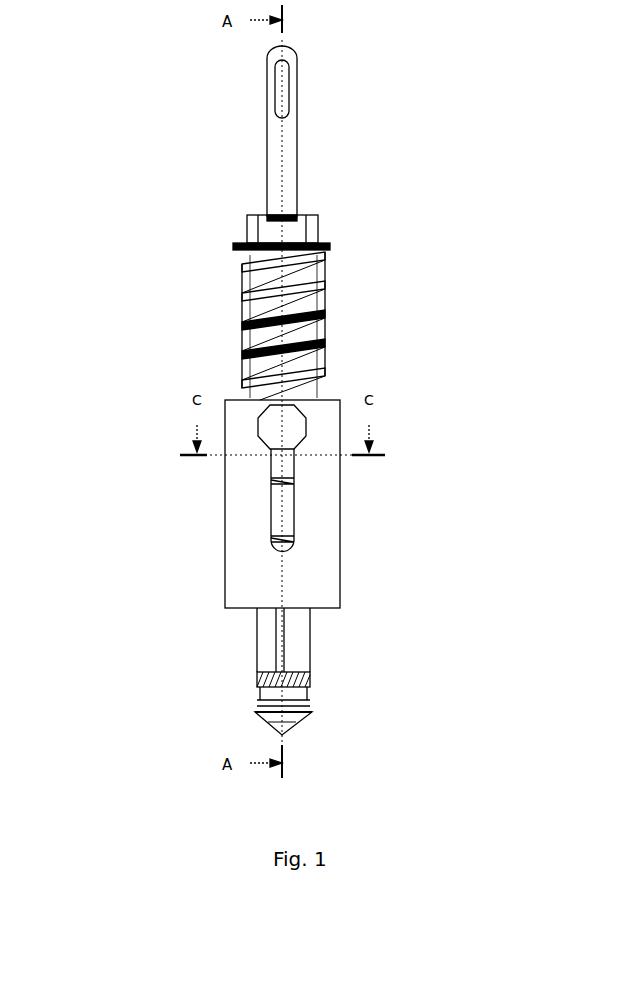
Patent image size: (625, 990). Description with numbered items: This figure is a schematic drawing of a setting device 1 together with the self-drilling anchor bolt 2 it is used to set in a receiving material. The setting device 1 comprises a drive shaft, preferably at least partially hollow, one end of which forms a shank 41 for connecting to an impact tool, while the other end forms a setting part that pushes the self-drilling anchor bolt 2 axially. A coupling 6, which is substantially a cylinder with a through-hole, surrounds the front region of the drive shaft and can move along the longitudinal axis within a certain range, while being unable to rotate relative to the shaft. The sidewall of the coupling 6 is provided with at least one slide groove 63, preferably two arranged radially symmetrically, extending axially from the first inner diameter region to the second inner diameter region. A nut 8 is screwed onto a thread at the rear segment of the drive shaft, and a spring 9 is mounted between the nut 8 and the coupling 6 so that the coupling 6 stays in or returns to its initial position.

The setting device 1 is at (397, 346).
The self-drilling anchor bolt 2 is at (292, 648).
The coupling 6 is at (240, 500).
The nut 8 is at (256, 230).
The spring 9 is at (243, 312).
The shank 41 is at (280, 170).
The slide groove 63 is at (273, 542).